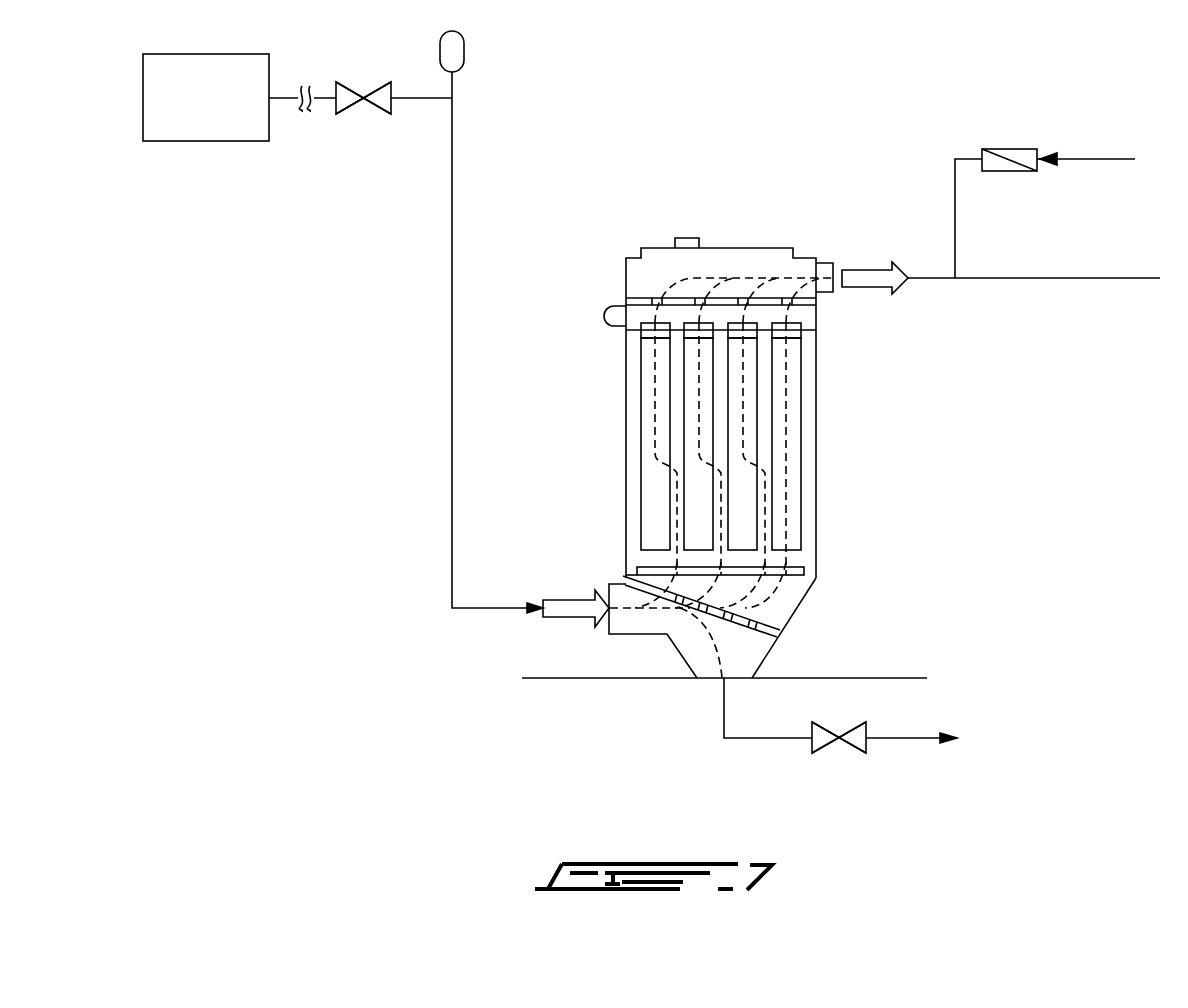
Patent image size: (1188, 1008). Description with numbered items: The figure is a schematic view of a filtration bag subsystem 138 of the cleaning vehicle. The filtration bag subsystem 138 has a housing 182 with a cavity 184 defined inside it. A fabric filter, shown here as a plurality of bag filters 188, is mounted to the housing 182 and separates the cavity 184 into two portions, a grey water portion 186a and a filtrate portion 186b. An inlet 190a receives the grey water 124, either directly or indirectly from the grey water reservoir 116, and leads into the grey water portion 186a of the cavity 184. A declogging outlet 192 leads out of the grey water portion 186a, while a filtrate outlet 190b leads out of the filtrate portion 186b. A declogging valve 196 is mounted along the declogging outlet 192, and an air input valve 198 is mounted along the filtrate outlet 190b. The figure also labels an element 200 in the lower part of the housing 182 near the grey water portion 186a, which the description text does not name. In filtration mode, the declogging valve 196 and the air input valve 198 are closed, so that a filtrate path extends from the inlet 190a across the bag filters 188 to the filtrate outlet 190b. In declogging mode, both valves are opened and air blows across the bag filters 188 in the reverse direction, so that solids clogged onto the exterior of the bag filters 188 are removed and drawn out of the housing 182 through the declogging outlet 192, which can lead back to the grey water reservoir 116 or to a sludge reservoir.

The grey water reservoir 116 is at (207, 110).
The filtration bag subsystem 138 is at (574, 232).
The grey water 124 is at (560, 606).
The housing 182 is at (817, 490).
The cavity 184 is at (805, 549).
The grey water portion 186a is at (688, 640).
The filtrate portion 186b is at (802, 314).
The bag filters 188 is at (649, 388).
The inlet 190a is at (598, 613).
The filtrate outlet 190b is at (1090, 277).
The declogging outlet 192 is at (912, 742).
The declogging valve 196 is at (818, 275).
The air input valve 198 is at (1012, 149).
The baffle plate 200 is at (730, 672).